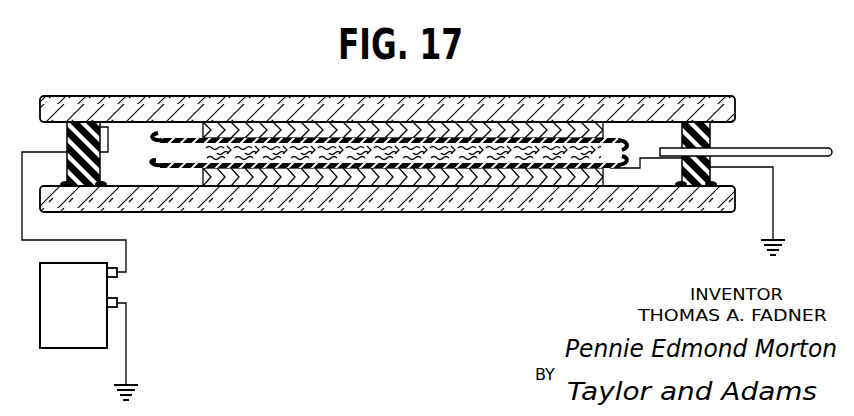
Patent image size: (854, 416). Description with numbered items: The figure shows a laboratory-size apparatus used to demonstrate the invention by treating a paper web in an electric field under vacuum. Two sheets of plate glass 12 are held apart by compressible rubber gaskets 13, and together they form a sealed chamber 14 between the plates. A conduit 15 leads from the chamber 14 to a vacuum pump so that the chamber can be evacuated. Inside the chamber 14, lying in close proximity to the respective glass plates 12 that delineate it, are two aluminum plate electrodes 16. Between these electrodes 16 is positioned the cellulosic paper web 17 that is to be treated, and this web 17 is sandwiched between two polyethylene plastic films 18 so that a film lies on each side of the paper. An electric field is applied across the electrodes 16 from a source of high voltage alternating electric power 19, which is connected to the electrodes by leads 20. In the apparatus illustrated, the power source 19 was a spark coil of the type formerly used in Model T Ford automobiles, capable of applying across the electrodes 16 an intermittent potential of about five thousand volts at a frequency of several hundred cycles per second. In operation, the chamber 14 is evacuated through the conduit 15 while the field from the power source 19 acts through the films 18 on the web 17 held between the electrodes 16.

The sheets of plate glass 12 is at (198, 97).
The compressible rubber gaskets 13 is at (67, 142).
The sealed chamber 14 is at (132, 135).
The conduit 15 is at (783, 152).
The aluminum plate electrodes 16 is at (458, 128).
The cellulosic paper web 17 is at (298, 148).
The polyethylene plastic films 18 is at (613, 140).
The source of high voltage alternating electric power 19 is at (83, 314).
The leads 20 is at (776, 222).